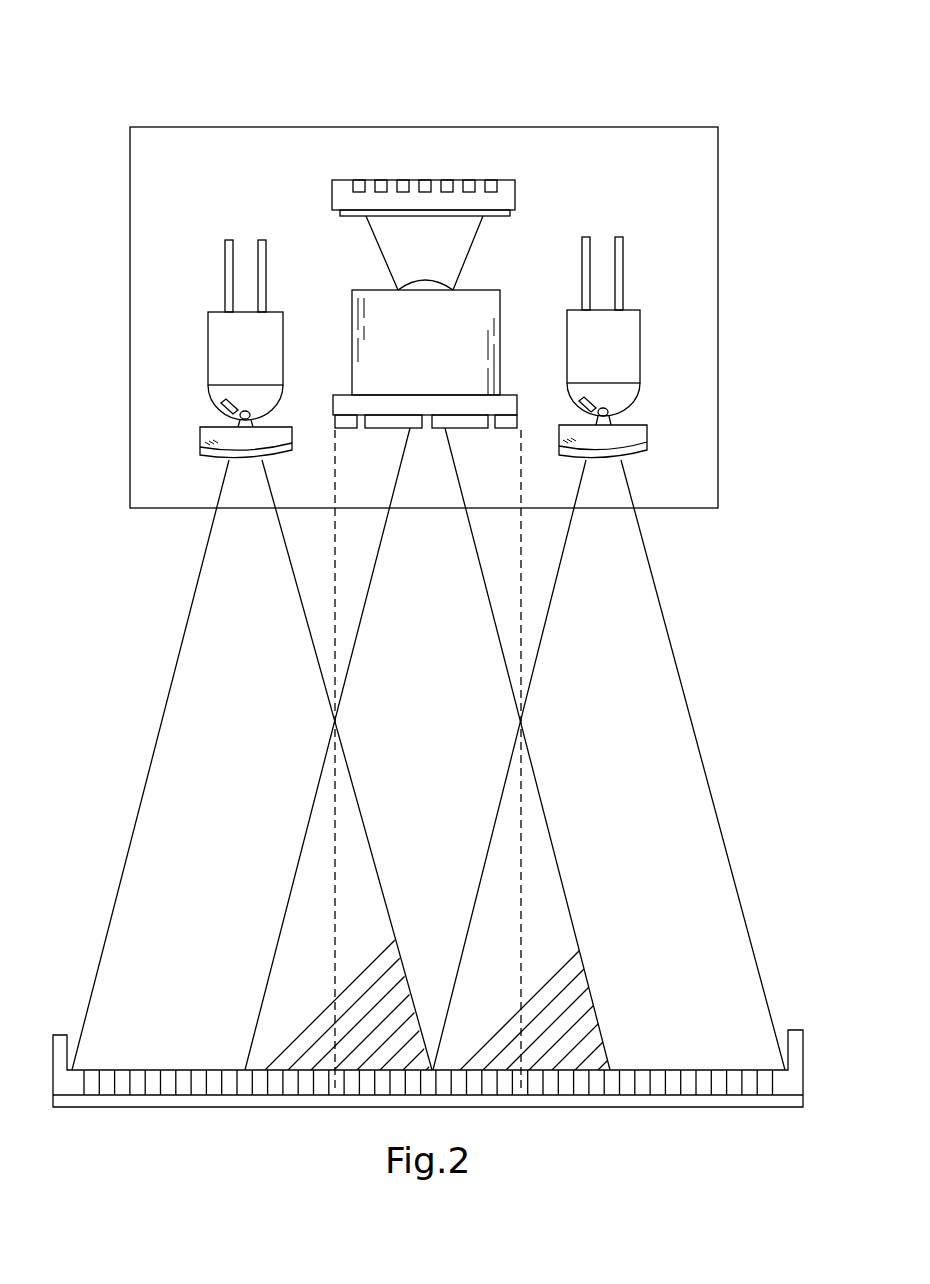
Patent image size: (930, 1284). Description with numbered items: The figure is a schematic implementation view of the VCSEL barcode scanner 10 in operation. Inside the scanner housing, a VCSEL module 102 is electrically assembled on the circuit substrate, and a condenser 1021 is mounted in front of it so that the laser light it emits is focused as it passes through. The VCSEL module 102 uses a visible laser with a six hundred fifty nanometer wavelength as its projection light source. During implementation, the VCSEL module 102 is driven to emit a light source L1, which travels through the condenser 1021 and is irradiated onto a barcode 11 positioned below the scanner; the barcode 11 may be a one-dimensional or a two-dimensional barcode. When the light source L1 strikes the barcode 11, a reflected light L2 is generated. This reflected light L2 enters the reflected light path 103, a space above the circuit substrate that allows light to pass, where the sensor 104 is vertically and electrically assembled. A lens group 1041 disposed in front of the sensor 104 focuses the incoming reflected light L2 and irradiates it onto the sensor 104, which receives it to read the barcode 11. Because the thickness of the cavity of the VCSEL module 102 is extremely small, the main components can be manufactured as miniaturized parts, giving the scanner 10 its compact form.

The VCSEL barcode scanner 10 is at (170, 96).
The sensor 104 is at (392, 190).
The lens group 1041 is at (477, 296).
The reflected light path 103 is at (502, 573).
The VCSEL module 102 is at (630, 370).
The condenser 1021 is at (635, 445).
The light source L1 is at (673, 862).
The reflected light L2 is at (375, 722).
The barcode 11 is at (657, 1093).